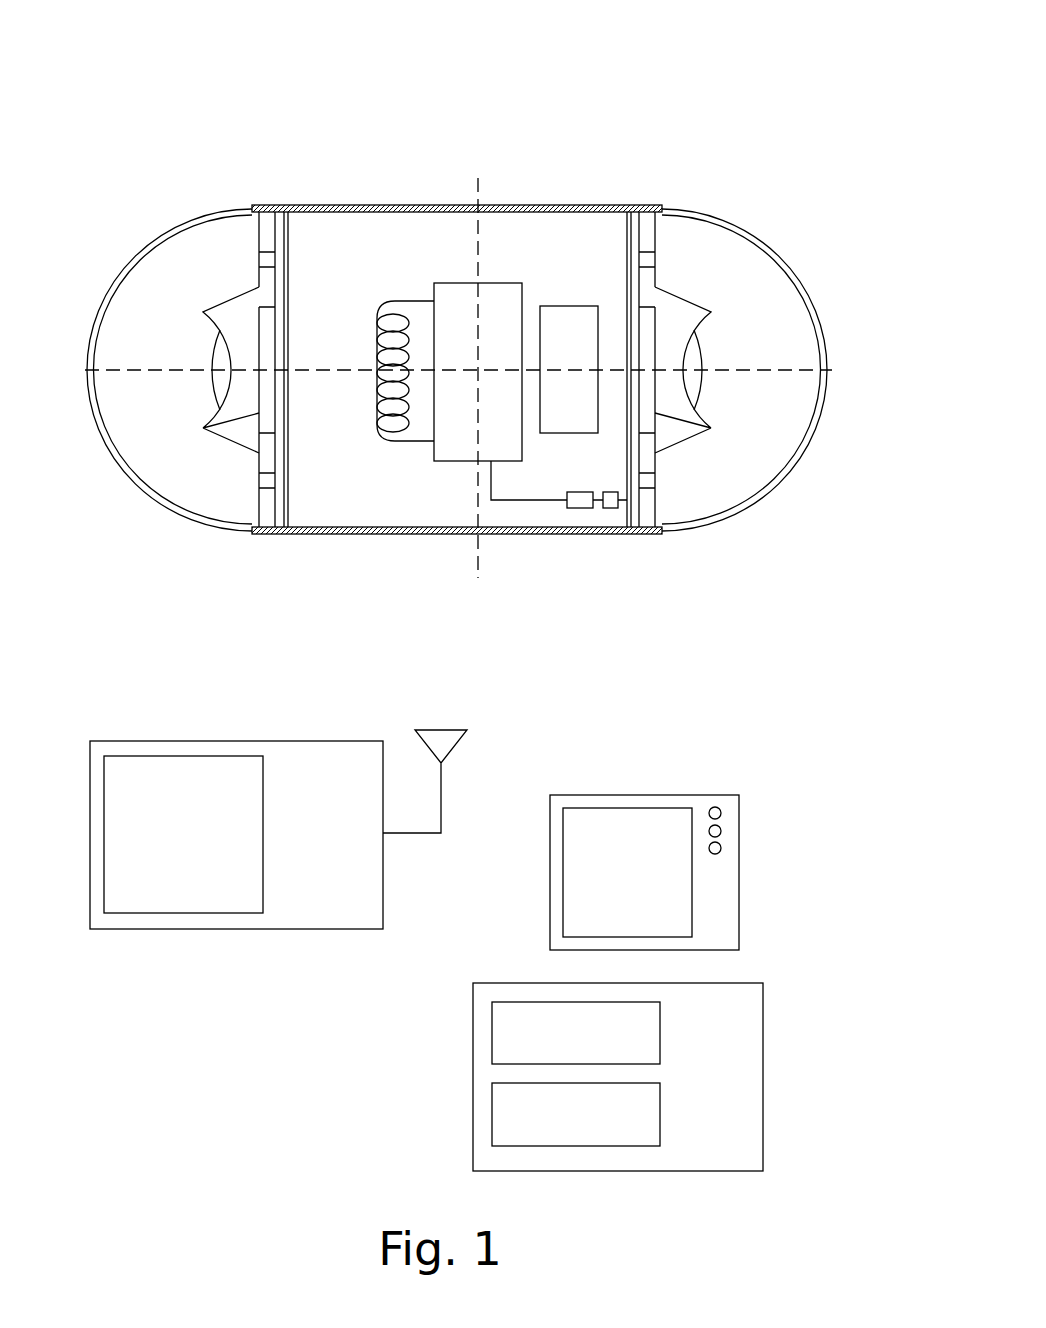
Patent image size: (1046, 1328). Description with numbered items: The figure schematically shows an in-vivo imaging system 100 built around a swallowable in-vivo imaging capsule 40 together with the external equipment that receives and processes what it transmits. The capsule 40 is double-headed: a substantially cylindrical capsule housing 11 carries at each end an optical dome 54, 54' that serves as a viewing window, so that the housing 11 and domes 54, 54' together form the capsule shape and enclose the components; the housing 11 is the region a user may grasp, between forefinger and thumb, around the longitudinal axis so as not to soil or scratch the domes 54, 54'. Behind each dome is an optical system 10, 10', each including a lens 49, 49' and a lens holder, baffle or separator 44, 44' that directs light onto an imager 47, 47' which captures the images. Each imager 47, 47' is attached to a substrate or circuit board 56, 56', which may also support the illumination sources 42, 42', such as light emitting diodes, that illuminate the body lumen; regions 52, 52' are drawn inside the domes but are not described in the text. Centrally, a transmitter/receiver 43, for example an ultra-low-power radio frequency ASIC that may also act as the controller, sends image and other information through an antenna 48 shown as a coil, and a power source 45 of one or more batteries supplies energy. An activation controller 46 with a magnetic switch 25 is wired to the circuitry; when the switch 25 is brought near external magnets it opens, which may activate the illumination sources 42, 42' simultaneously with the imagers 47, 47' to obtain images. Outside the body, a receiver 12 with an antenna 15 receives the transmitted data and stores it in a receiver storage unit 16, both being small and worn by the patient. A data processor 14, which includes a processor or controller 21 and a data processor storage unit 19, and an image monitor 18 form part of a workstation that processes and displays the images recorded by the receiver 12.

The in-vivo imaging system 100 is at (669, 63).
The in-vivo imaging capsule 40 is at (327, 108).
The optical system 10 is at (774, 341).
The optical system 10' is at (137, 346).
The capsule housing 11 is at (425, 205).
The receiver 12 is at (313, 741).
The data processor 14 is at (797, 972).
The antenna or antenna array 15 is at (441, 730).
The receiver storage unit 16 is at (183, 913).
The image monitor 18 is at (619, 795).
The data processor storage unit 19 is at (660, 1107).
The processor or controller 21 is at (660, 1032).
The magnetic switch 25 is at (613, 508).
The illumination source 42 is at (653, 367).
The illumination source 42' is at (258, 367).
The transmitter/receiver 43 is at (453, 282).
The lens holder, baffle or separator 44 is at (690, 283).
The lens holder, baffle or separator 44' is at (221, 284).
The power source 45 is at (568, 305).
The activation controller 46 is at (585, 508).
The imager 47 is at (784, 449).
The imager 47' is at (127, 449).
The antenna 48 is at (395, 298).
The lens 49 is at (778, 314).
The lens 49' is at (130, 318).
The cavity 52 is at (828, 408).
The second cavity 52' is at (82, 408).
The optical dome 54 is at (741, 351).
The optical dome 54' is at (172, 351).
The substrate or circuit board 56 is at (584, 321).
The substrate or circuit board 56' is at (311, 415).